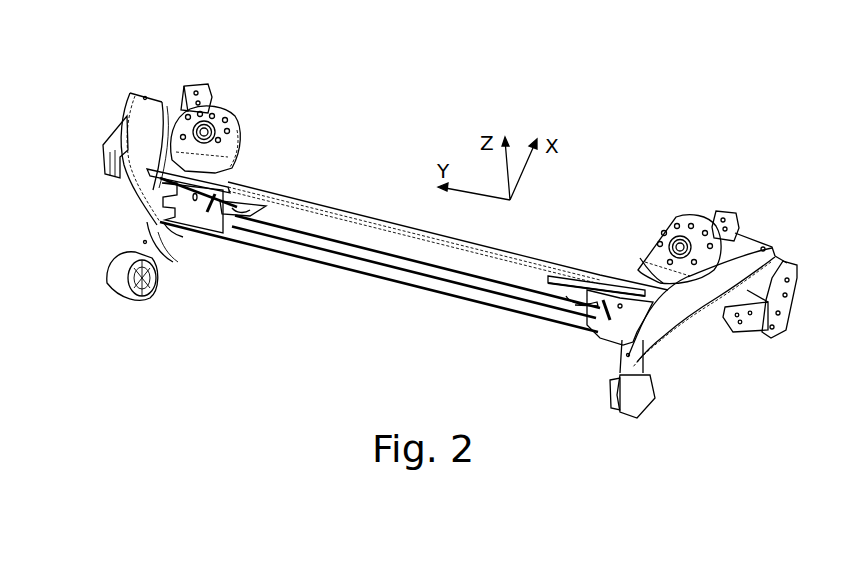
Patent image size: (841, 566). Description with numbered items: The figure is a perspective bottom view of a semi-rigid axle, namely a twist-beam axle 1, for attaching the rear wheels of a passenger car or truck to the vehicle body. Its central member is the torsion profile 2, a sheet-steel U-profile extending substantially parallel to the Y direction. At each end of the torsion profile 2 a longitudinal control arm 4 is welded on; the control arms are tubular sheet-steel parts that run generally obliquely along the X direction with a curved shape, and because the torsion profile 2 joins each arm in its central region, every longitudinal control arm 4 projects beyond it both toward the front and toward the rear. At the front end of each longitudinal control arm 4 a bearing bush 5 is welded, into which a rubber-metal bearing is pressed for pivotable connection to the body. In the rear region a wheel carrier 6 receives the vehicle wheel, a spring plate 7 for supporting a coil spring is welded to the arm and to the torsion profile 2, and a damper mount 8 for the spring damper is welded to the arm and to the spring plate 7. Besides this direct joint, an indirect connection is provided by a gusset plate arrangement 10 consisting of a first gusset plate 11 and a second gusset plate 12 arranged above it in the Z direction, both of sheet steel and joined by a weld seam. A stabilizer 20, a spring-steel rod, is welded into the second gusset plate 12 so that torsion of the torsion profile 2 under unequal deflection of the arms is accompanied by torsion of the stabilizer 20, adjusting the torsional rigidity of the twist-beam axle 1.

The twist-beam axle 1 is at (453, 82).
The torsion profile 2 is at (362, 265).
The longitudinal control arm 4 is at (133, 192).
The bearing bush 5 is at (111, 0).
The wheel carrier 6 is at (112, 130).
The spring plate 7 is at (223, 117).
The damper mount 8 is at (196, 92).
The gusset plate arrangement 10 is at (232, 188).
The first gusset plate 11 is at (196, 213).
The second gusset plate 12 is at (237, 213).
The stabilizer 20 is at (298, 226).